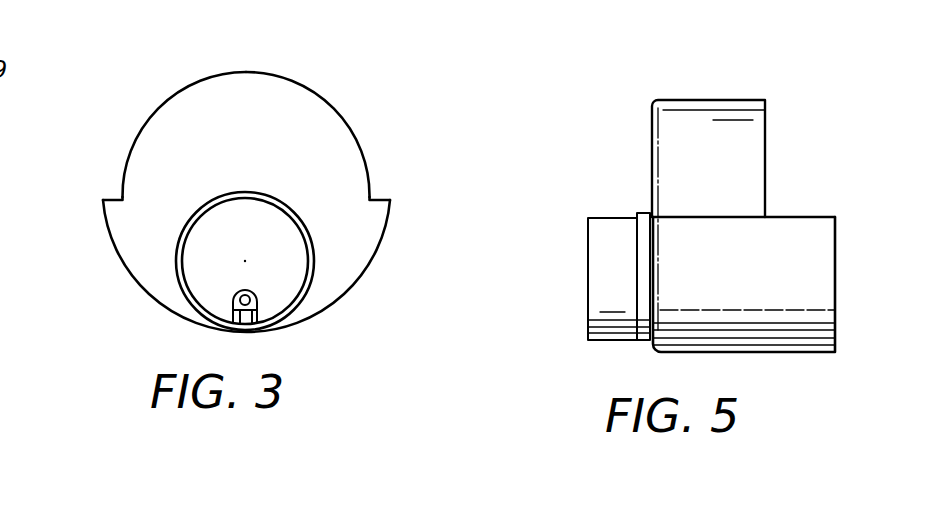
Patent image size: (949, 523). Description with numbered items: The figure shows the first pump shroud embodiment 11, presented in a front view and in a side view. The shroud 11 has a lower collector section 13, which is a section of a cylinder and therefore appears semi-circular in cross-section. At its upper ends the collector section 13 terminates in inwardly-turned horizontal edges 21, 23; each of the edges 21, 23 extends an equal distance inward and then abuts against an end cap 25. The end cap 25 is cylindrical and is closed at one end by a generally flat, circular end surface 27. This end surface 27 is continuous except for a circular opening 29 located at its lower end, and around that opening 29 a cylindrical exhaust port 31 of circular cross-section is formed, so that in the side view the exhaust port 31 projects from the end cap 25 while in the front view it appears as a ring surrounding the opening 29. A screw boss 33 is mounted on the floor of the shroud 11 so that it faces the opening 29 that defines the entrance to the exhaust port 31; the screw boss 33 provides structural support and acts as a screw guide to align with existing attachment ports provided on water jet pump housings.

In FIG. 3, the pump shroud 11 is at (363, 283).
In FIG. 5, the pump shroud 11 is at (842, 261).
In FIG. 5, the lower collector section 13 is at (782, 288).
In FIG. 3, the inwardly-turned horizontal edge 21 is at (115, 197).
In FIG. 3, the inwardly-turned horizontal edge 23 is at (382, 197).
In FIG. 5, the inwardly-turned horizontal edge 23 is at (783, 212).
In FIG. 3, the end cap 25 is at (213, 77).
In FIG. 5, the end cap 25 is at (665, 173).
In FIG. 3, the end surface 27 is at (280, 98).
In FIG. 5, the end surface 27 is at (650, 108).
In FIG. 3, the circular opening 29 is at (197, 252).
In FIG. 3, the cylindrical exhaust port 31 is at (278, 202).
In FIG. 5, the cylindrical exhaust port 31 is at (607, 228).
In FIG. 3, the screw boss 33 is at (256, 289).